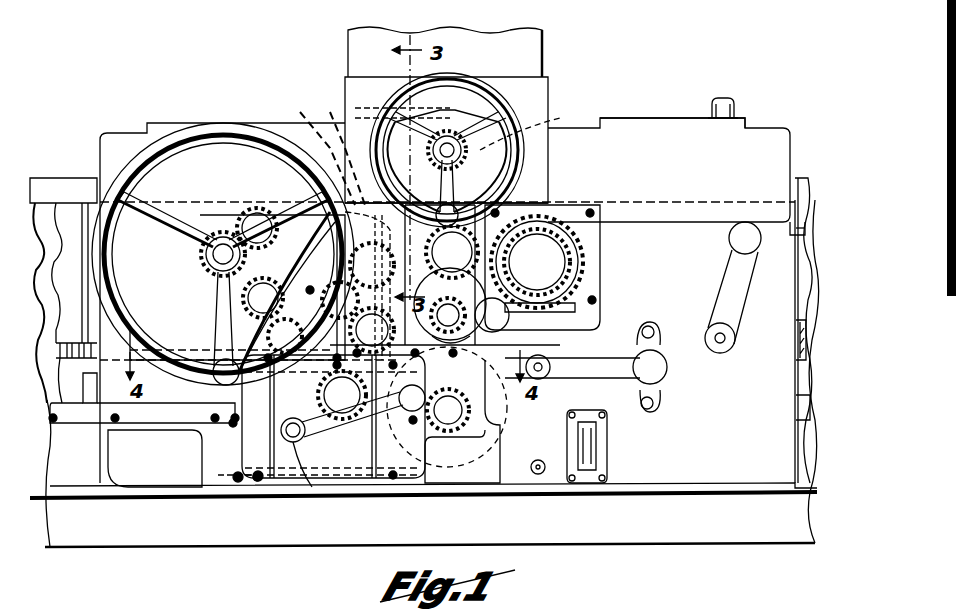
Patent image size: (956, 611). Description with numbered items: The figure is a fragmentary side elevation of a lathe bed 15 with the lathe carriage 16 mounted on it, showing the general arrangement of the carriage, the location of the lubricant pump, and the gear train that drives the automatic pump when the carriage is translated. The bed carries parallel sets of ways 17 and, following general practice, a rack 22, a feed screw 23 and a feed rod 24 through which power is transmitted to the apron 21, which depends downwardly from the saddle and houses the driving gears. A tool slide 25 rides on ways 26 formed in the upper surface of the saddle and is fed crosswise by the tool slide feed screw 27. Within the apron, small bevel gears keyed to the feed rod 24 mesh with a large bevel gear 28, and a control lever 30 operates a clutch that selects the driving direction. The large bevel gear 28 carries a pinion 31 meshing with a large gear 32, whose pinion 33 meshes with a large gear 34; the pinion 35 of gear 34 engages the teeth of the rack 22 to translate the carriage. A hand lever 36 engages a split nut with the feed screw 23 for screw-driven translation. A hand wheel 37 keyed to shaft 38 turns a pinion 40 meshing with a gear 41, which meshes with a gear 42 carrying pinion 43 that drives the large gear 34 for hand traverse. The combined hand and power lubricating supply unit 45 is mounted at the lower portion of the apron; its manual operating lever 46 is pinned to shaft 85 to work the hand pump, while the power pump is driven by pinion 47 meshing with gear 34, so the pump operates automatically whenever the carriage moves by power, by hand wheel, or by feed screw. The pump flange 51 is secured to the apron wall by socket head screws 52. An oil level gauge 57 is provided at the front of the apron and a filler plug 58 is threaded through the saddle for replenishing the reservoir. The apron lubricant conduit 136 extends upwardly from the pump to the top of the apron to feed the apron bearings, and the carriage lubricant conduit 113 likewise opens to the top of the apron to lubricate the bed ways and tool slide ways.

The lathe bed 15 is at (806, 172).
The lathe carriage 16 is at (620, 117).
The ways 17 is at (56, 178).
The apron 21 is at (770, 478).
The rack 22 is at (795, 240).
The feed screw 23 is at (793, 341).
The feed rod 24 is at (795, 408).
The tool slide 25 is at (540, 98).
The ways 26 is at (530, 122).
The tool slide feed screw 27 is at (450, 146).
The large bevel gear 28 is at (493, 460).
The control lever 30 is at (608, 358).
The pinion 31 is at (472, 400).
The large gear 32 is at (528, 362).
The pinion 33 is at (461, 305).
The large gear 34 is at (446, 294).
The pinion 35 is at (358, 297).
The hand lever 36 is at (715, 295).
The hand wheel 37 is at (205, 124).
The shaft 38 is at (212, 255).
The pinion 40 is at (224, 232).
The gear 41 is at (254, 212).
The gear 42 is at (228, 323).
The pinion 43 is at (222, 351).
The lubricating supply unit 45 is at (235, 483).
The manual operating lever 46 is at (372, 485).
The pinion 47 is at (306, 428).
The flange 51 is at (262, 483).
The socket head screws 52 is at (255, 475).
The oil level gauge 57 is at (608, 440).
The filler plug 58 is at (722, 100).
The shaft 85 is at (315, 487).
The carriage lubricant conduit 113 is at (336, 150).
The apron lubricant conduit 136 is at (313, 150).